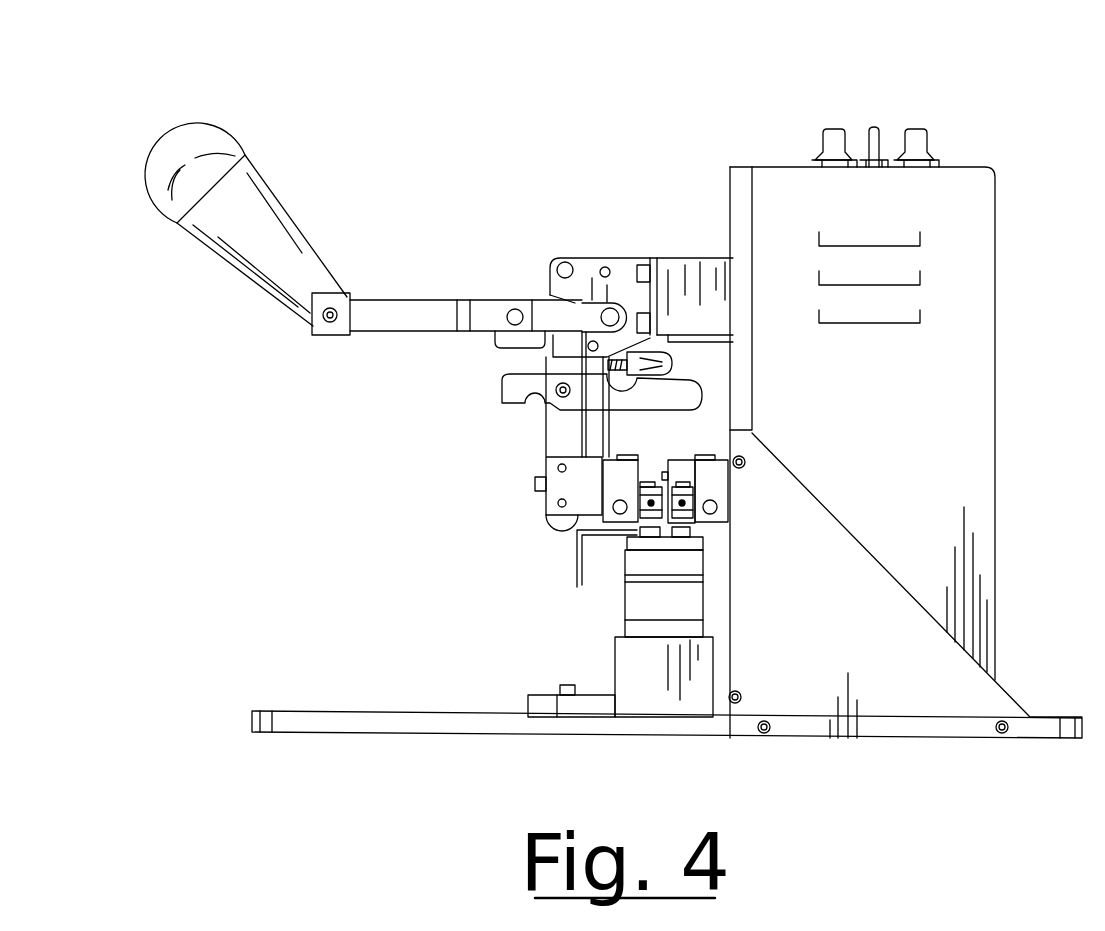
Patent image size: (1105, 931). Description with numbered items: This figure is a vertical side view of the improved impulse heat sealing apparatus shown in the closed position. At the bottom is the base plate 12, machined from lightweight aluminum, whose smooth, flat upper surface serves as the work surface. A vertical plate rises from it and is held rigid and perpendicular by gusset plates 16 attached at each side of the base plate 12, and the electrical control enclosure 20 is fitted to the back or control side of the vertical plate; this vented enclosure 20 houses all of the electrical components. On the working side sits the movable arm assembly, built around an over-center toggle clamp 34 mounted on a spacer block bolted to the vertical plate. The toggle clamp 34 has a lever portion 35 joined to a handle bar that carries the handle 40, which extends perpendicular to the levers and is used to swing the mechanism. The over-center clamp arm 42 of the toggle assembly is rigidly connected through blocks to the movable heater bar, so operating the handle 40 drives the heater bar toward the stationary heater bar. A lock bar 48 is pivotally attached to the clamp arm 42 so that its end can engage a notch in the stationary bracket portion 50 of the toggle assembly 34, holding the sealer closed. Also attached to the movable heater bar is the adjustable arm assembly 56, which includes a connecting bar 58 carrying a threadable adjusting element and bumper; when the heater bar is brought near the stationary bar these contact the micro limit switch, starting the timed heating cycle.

The base plate 12 is at (402, 733).
The gusset plates 16 is at (822, 636).
The electrical control enclosure 20 is at (997, 340).
The over-center toggle clamp 34 is at (592, 247).
The lever portion 35 is at (385, 300).
The handle 40 is at (192, 140).
The over-center clamp arm 42 is at (537, 458).
The lock bar 48 is at (518, 405).
The stationary bracket portion 50 is at (627, 258).
The adjustable arm assembly 56 is at (580, 447).
The connecting bar 58 is at (608, 428).